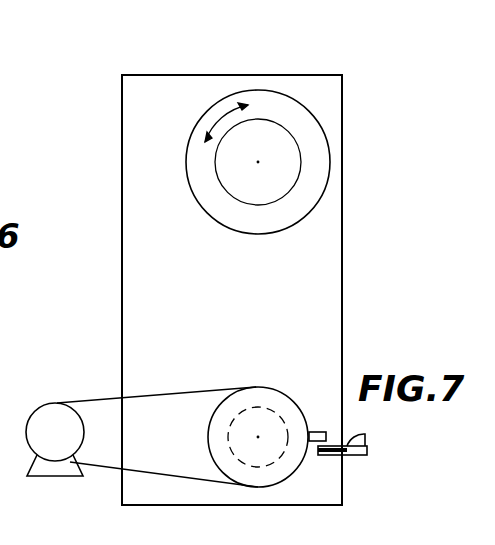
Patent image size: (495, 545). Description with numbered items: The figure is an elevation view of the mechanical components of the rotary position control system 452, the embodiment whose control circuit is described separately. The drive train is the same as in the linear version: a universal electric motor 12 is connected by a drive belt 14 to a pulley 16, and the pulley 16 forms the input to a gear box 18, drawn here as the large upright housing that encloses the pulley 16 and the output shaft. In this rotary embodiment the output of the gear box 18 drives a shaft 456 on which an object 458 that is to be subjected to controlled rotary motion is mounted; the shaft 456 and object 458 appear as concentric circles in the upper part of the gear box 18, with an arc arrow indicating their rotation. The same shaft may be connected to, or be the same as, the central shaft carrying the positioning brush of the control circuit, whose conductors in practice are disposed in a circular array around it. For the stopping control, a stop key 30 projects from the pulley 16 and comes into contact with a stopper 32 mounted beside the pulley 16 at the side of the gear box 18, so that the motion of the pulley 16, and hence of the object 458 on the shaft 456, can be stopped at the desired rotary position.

The universal electric motor 12 is at (36, 418).
The drive belt 14 is at (97, 398).
The pulley 16 is at (285, 391).
The gear box 18 is at (342, 248).
The stop key 30 is at (318, 432).
The stopper 32 is at (334, 457).
The rotary position control system 452 is at (343, 325).
The shaft 456 is at (326, 137).
The object 458 is at (294, 185).